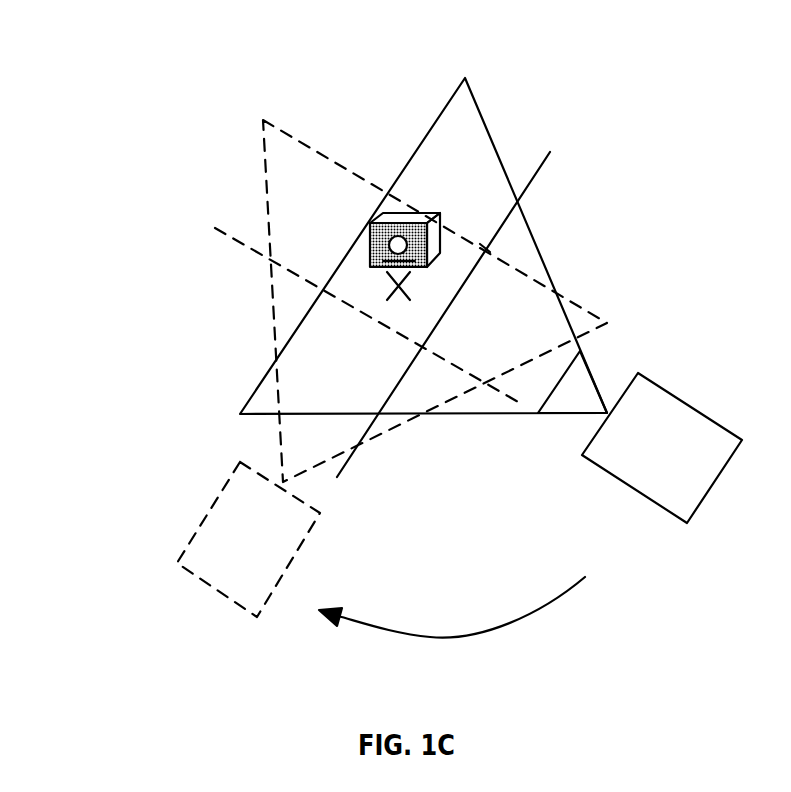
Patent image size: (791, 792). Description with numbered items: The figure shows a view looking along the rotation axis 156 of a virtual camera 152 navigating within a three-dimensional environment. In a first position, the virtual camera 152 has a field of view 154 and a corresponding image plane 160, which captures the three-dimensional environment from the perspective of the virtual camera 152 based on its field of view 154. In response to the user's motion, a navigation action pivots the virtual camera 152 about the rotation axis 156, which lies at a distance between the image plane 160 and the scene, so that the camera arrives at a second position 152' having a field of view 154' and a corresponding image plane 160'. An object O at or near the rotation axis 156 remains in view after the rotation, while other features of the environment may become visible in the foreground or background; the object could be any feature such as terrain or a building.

The field-of-view 154 is at (423, 219).
The field of view 154' is at (359, 301).
The image plane 160 is at (509, 285).
The image plane 160' is at (283, 312).
The rotation axis 156 is at (402, 299).
The virtual camera 152 is at (662, 501).
The second position 152' is at (181, 539).